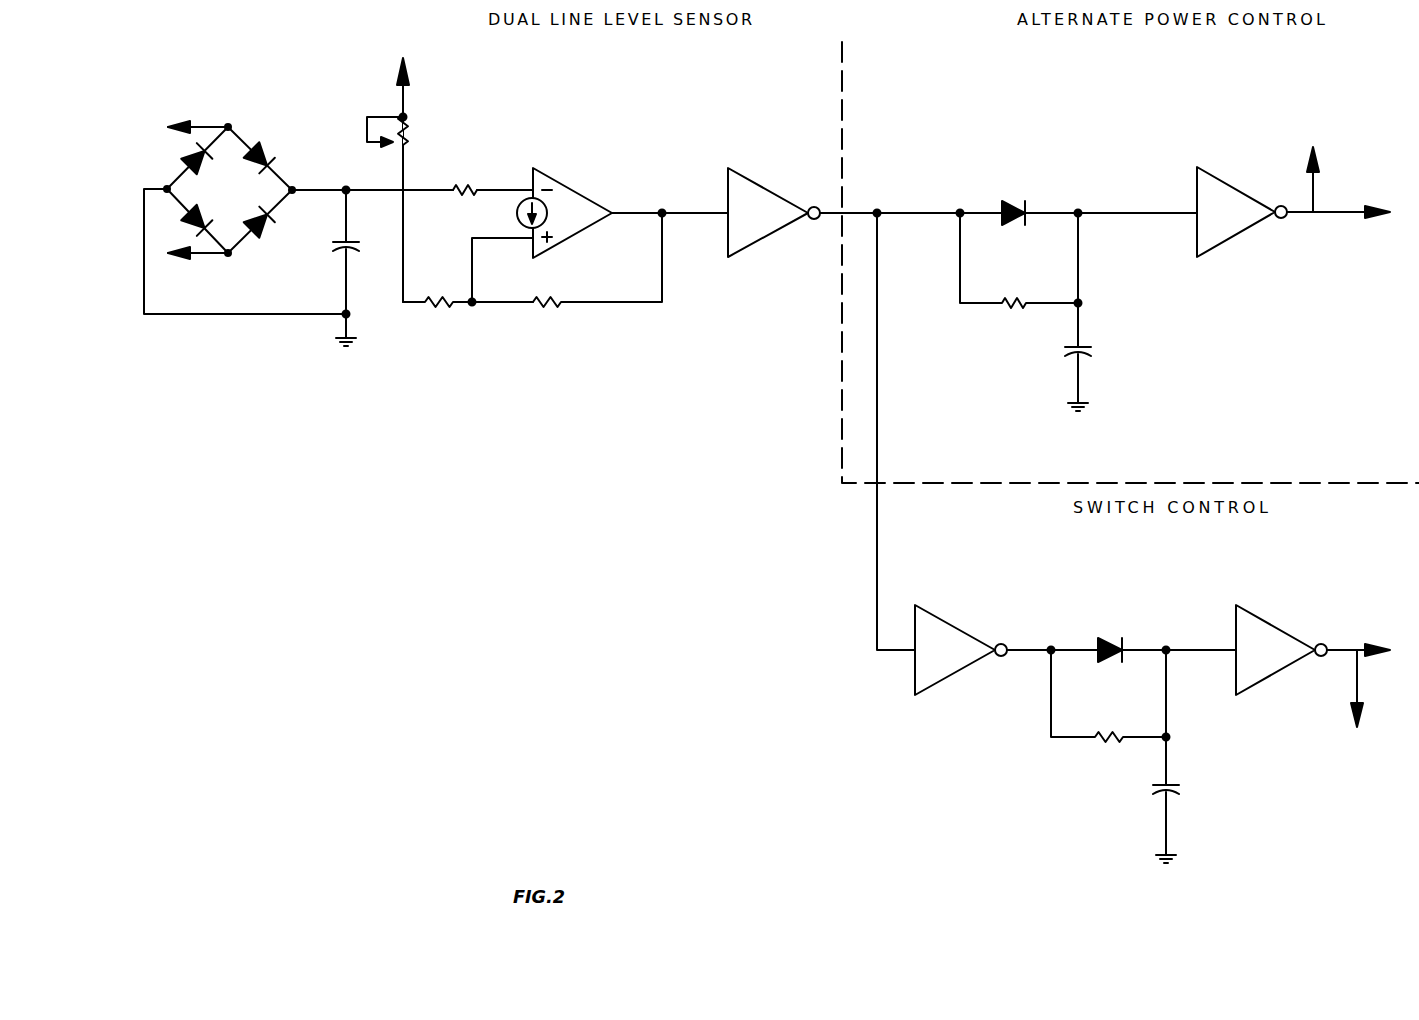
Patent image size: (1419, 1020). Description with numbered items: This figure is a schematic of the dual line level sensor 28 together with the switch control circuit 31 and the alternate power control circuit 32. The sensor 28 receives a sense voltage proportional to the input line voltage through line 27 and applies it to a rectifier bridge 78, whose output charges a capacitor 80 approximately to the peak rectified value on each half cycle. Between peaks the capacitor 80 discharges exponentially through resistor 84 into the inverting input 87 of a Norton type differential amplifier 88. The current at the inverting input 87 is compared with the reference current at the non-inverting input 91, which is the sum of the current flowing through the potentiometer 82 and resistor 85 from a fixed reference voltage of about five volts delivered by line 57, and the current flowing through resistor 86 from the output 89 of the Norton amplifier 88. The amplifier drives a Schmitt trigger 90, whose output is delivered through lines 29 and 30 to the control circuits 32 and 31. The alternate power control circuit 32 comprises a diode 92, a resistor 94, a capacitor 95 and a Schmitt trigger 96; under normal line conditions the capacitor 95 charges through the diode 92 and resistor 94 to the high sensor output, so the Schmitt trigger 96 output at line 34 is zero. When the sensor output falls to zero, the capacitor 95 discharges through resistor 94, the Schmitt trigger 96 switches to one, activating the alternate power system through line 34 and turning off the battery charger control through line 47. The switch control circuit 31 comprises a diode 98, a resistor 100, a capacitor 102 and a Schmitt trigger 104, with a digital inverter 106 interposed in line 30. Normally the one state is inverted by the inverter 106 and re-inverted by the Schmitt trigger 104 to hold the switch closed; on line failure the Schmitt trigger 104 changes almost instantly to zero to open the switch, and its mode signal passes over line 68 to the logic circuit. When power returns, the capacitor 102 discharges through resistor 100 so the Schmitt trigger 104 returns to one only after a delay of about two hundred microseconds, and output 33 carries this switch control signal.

The line 27 is at (158, 250).
The rectifier bridge 78 is at (233, 152).
The capacitor 80 is at (335, 243).
The line 57 is at (405, 94).
The potentiometer 82 is at (412, 130).
The resistor 84 is at (457, 198).
The resistor 85 is at (440, 310).
The resistor 86 is at (550, 310).
The inverting input 87 is at (528, 186).
The Norton type differential amplifier 88 is at (565, 198).
The output 89 is at (635, 211).
The non-inverting input 91 is at (527, 247).
The dual line level sensor 28 is at (585, 95).
The Schmitt trigger 90 is at (755, 198).
The line 29 is at (900, 210).
The line 30 is at (877, 415).
The diode 92 is at (1017, 192).
The resistor 94 is at (1017, 310).
The capacitor 95 is at (1095, 350).
The Schmitt trigger 96 is at (1203, 190).
The line 47 is at (1312, 192).
The line 34 is at (1353, 213).
The alternate power control circuit 32 is at (1150, 100).
The switch control circuit 31 is at (1110, 560).
The digital inverter 106 is at (940, 633).
The diode 98 is at (1105, 633).
The resistor 100 is at (1107, 743).
The capacitor 102 is at (1185, 792).
The Schmitt trigger 104 is at (1257, 637).
The switch control output 33 is at (1342, 648).
The line 68 is at (1357, 685).